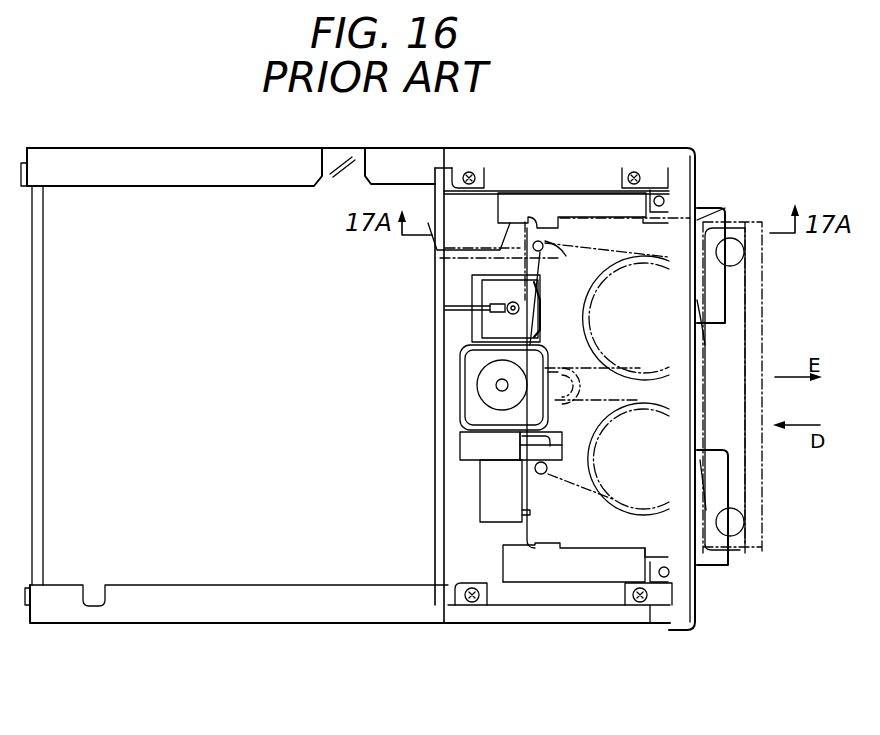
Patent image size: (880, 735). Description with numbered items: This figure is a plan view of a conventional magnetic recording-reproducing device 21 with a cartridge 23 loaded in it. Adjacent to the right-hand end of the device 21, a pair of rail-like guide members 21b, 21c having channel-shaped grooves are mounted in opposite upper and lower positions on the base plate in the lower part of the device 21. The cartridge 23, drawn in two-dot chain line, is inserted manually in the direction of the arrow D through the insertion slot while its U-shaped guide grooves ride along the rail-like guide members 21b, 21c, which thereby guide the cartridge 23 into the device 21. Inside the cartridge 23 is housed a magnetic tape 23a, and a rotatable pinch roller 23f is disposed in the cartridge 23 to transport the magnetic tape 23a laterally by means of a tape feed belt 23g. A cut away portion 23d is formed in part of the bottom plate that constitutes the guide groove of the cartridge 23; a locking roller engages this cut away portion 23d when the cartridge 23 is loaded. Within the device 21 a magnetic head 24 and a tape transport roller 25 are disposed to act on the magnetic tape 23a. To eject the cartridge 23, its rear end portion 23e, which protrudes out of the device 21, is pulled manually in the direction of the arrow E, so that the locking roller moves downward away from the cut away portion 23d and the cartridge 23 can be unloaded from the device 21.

The magnetic recording-reproducing device 21 is at (433, 634).
The rail-like guide member 21b is at (521, 201).
The rail-like guide member 21c is at (578, 563).
The cartridge 23 is at (772, 470).
The magnetic tape 23a is at (447, 258).
The cut away portion 23d is at (566, 195).
The rear end portion 23e is at (720, 356).
The pinch roller 23f is at (470, 412).
The tape feed belt 23g is at (745, 297).
The magnetic head 24 is at (472, 323).
The tape transport roller 25 is at (490, 377).